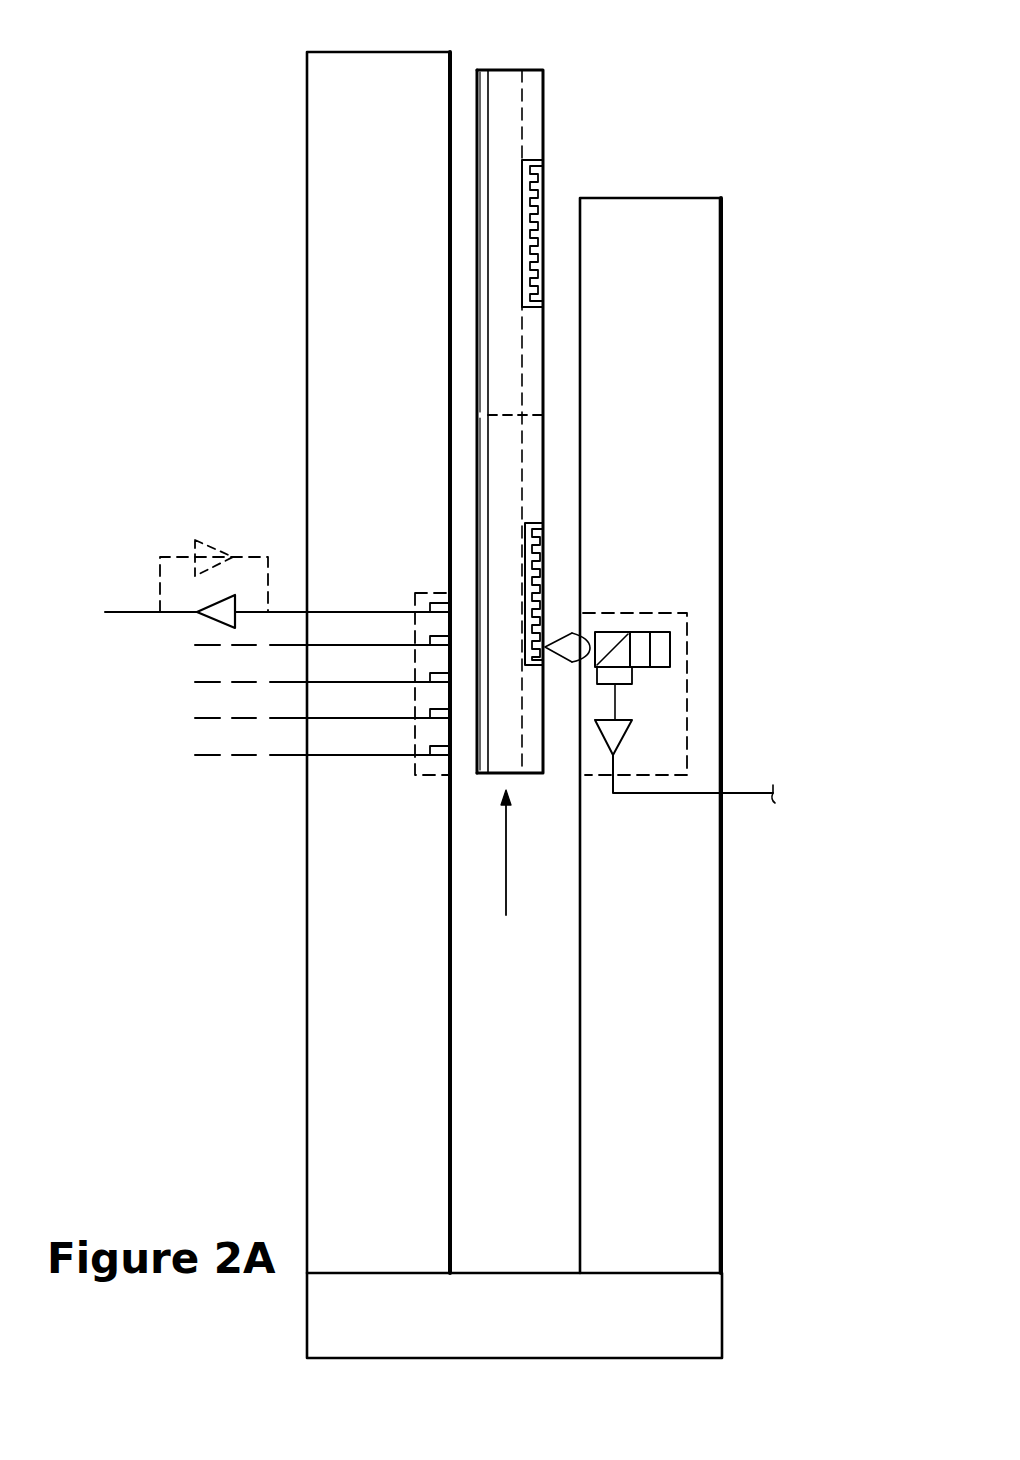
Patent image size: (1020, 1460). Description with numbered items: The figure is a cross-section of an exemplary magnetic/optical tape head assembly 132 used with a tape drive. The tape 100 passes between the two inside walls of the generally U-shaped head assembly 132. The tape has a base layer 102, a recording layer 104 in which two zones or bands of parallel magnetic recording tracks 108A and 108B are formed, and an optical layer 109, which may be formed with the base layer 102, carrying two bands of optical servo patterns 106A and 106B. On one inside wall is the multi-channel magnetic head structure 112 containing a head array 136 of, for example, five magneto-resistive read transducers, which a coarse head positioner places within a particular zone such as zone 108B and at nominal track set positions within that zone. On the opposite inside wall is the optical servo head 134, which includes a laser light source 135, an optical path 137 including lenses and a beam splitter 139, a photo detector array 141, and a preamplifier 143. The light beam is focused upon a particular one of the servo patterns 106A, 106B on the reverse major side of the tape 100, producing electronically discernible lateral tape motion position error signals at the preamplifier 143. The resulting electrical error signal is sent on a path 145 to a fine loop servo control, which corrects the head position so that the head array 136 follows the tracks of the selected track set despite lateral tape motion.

The tape 100 is at (508, 870).
The base layer 102 is at (497, 102).
The recording layer 104 is at (478, 68).
The optical servo pattern 106A is at (542, 205).
The optical servo pattern 106B is at (543, 553).
The zone of parallel magnetic recording tracks 108A is at (477, 236).
The zone of parallel magnetic recording tracks 108B is at (480, 470).
The optical layer 109 is at (543, 64).
The multi-channel magnetic head structure 112 is at (323, 82).
The magnetic/optical tape head assembly 132 is at (257, 1002).
The optical servo head 134 is at (683, 677).
The laser light source 135 is at (658, 643).
The head array 136 is at (413, 598).
The optical path 137 is at (607, 640).
The beam splitter 139 is at (622, 658).
The photo detector array 141 is at (625, 683).
The preamplifier 143 is at (612, 738).
The path 145 is at (760, 797).